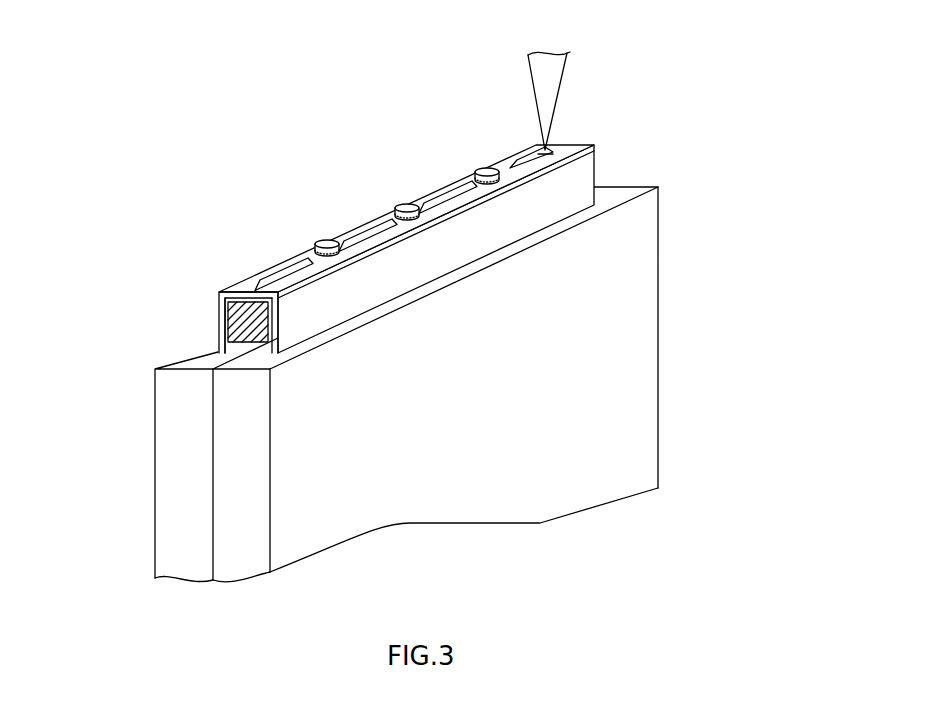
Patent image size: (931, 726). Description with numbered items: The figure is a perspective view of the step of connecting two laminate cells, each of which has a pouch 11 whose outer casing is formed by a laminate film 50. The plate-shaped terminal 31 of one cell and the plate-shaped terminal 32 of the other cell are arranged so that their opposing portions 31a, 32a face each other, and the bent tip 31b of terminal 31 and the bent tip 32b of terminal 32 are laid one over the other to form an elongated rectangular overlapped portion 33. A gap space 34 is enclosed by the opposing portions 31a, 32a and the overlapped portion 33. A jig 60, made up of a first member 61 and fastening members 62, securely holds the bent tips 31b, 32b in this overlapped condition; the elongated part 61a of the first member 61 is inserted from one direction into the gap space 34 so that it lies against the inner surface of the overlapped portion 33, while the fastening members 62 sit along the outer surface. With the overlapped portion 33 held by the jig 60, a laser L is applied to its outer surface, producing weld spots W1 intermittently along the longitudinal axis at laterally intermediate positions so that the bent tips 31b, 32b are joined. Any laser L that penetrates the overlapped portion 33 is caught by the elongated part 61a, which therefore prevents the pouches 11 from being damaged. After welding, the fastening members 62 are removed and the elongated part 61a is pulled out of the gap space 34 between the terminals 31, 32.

The pouch 11 is at (153, 480).
The laminate film 50 is at (412, 384).
The plate-shaped terminal 31 is at (391, 224).
The opposing portion 31a is at (217, 303).
The bent tip 31b is at (262, 312).
The plate-shaped terminal 32 is at (578, 180).
The opposing portion 32a is at (279, 329).
The bent tip 32b is at (279, 317).
The overlapped portion 33 is at (565, 137).
The gap space 34 is at (226, 333).
The jig 60 is at (396, 186).
The first member 61 is at (241, 352).
The elongated part 61a is at (250, 338).
The fastening member 62 is at (318, 248).
The weld spot W1 is at (288, 262).
The laser L is at (527, 80).